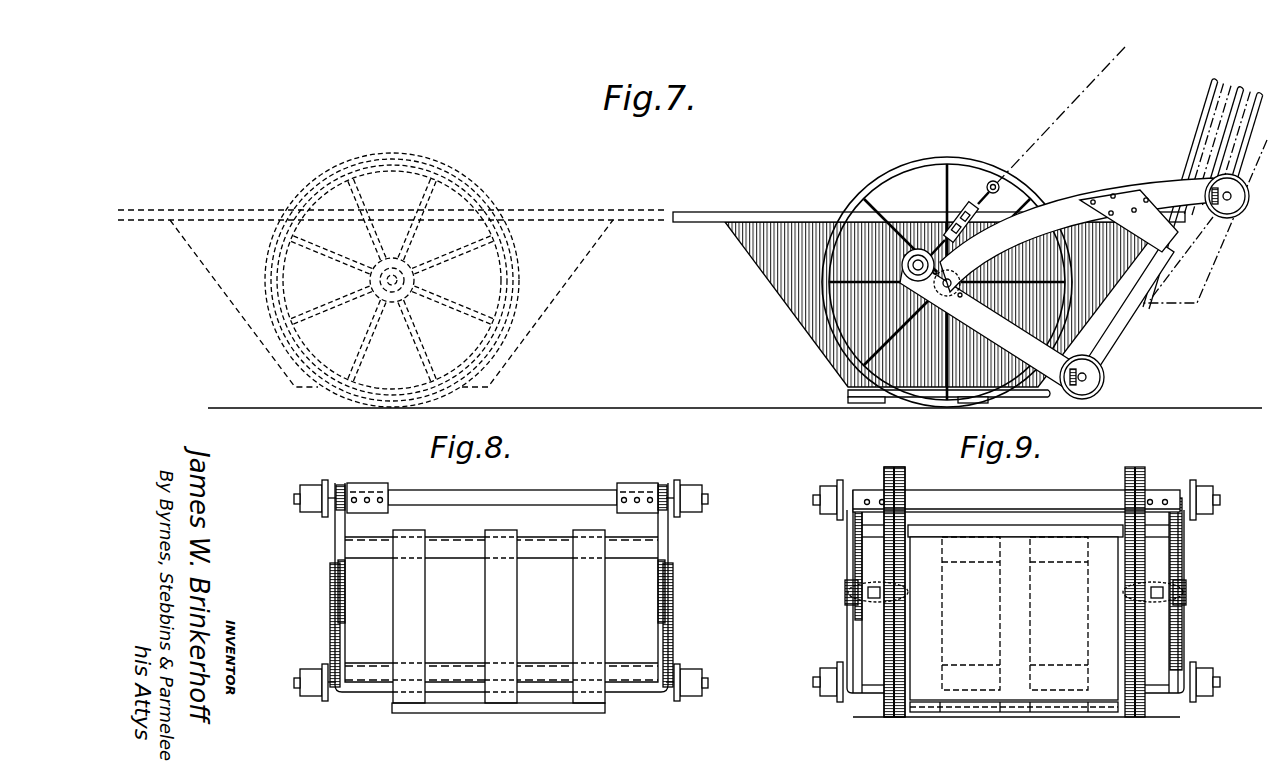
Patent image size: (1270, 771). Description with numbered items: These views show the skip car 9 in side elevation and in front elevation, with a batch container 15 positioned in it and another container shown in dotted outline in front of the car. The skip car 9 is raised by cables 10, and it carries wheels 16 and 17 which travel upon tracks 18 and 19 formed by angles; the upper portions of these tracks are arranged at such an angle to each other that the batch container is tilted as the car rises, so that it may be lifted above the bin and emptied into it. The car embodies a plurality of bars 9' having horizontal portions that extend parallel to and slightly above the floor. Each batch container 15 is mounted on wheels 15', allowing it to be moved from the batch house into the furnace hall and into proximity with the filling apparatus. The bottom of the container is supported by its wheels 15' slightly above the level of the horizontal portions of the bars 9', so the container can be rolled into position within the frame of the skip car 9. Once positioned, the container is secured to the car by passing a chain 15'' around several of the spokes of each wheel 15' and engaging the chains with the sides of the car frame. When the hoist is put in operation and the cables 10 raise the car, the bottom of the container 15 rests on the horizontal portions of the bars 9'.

In FIG. 7, the skip car 9 is at (1057, 283).
In FIG. 8, the skip car 9 is at (497, 602).
In FIG. 9, the skip car 9 is at (1011, 603).
In FIG. 8, the bars 9' is at (509, 621).
In FIG. 9, the bars 9' is at (1014, 721).
In FIG. 7, the cables 10 is at (1072, 104).
In FIG. 7, the batch container 15 is at (651, 306).
In FIG. 9, the batch container 15 is at (1014, 618).
In FIG. 7, the wheels 15' is at (668, 268).
In FIG. 9, the wheels 15' is at (1018, 579).
In FIG. 7, the chain 15'' is at (973, 275).
In FIG. 9, the chain 15'' is at (1013, 584).
In FIG. 7, the wheels 16 is at (1105, 380).
In FIG. 8, the wheels 16 is at (312, 700).
In FIG. 9, the wheels 16 is at (833, 698).
In FIG. 7, the wheels 17 is at (1239, 207).
In FIG. 8, the wheels 17 is at (309, 487).
In FIG. 9, the wheels 17 is at (833, 487).
In FIG. 7, the tracks 18 is at (1222, 150).
In FIG. 7, the tracks 19 is at (1213, 270).